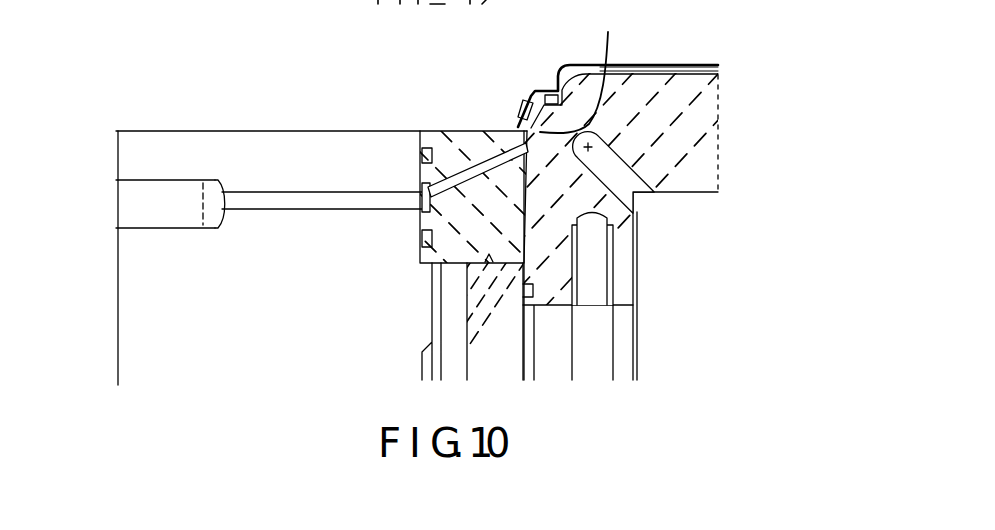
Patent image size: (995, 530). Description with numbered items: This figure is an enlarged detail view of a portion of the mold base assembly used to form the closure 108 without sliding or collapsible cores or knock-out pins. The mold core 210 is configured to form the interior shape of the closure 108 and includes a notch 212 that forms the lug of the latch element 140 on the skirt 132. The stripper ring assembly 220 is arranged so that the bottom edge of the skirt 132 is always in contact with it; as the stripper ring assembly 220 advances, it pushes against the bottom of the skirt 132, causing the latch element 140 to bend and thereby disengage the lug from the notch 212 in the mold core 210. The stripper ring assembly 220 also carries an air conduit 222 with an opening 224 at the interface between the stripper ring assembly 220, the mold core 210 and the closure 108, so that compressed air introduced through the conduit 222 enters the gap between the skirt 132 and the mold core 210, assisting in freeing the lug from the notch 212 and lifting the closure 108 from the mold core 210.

The stripper ring assembly 220 is at (148, 270).
The air conduit 222 is at (303, 195).
The opening 224 is at (520, 150).
The skirt 132 is at (517, 122).
The latch element 140 is at (519, 112).
The closure 108 is at (567, 61).
The notch 212 is at (604, 66).
The mold core 210 is at (641, 90).